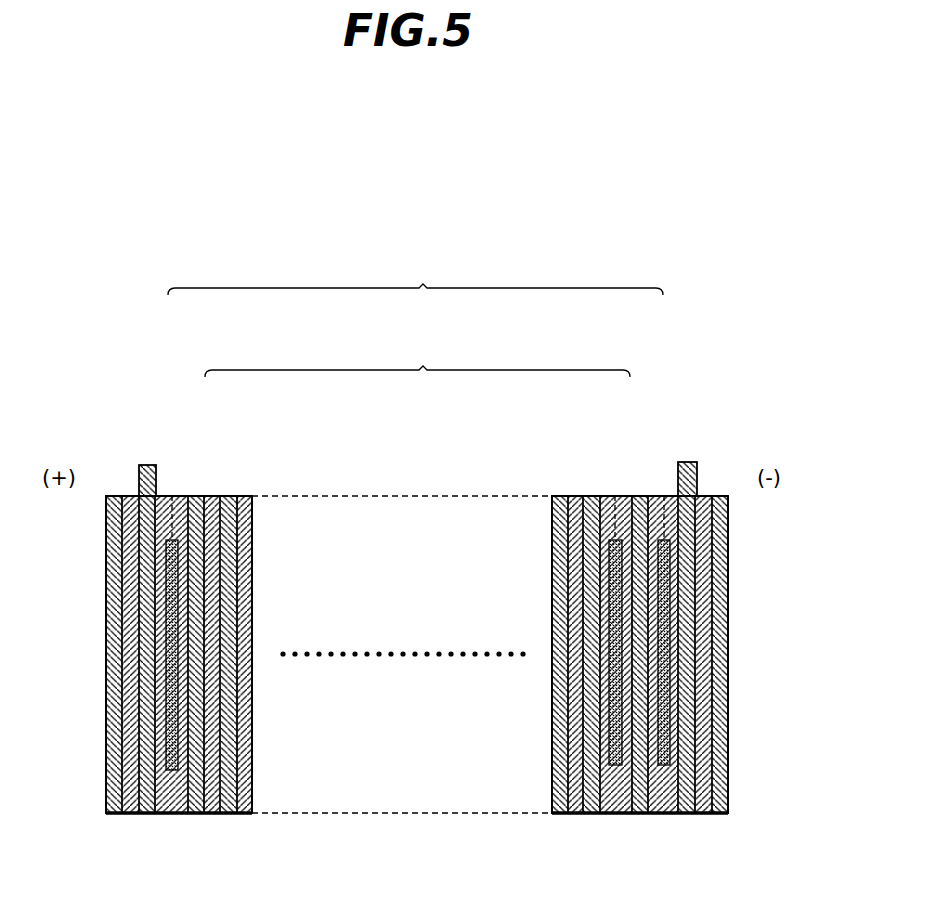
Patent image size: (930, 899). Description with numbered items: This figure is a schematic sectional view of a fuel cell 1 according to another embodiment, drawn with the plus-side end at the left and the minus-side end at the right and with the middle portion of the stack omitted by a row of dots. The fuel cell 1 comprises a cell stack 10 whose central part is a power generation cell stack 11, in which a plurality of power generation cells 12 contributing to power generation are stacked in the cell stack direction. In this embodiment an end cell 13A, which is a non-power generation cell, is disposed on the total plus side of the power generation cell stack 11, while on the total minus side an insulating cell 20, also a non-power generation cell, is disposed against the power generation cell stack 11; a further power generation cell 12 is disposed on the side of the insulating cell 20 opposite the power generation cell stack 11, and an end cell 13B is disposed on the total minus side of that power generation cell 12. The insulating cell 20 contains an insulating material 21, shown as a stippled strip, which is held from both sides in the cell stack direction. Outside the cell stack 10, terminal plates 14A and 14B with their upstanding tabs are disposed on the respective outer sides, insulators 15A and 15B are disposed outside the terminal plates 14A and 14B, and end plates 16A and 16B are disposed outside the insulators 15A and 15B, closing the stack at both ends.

The fuel cell 1 is at (719, 245).
The cell stack 10 is at (415, 279).
The power generation cell stack 11 is at (417, 360).
The power generation cell 12 is at (197, 496).
The end cell 13A is at (163, 496).
The end cell 13B is at (663, 496).
The terminal plate 14A is at (143, 466).
The terminal plate 14B is at (690, 467).
The insulator 15A is at (133, 813).
The insulator 15B is at (705, 813).
The end plate 16A is at (118, 813).
The end plate 16B is at (722, 813).
The insulating cell 20 is at (620, 496).
The insulating material 21 is at (173, 772).